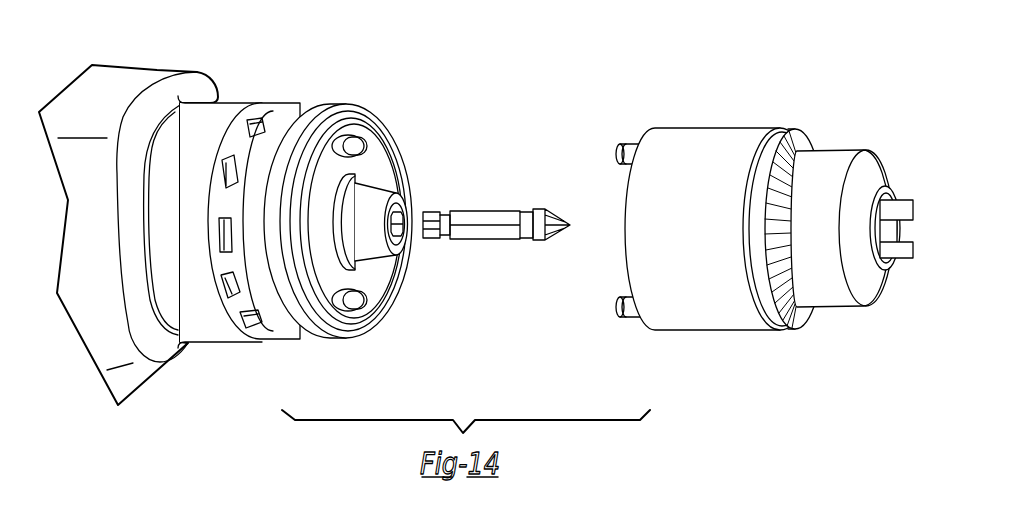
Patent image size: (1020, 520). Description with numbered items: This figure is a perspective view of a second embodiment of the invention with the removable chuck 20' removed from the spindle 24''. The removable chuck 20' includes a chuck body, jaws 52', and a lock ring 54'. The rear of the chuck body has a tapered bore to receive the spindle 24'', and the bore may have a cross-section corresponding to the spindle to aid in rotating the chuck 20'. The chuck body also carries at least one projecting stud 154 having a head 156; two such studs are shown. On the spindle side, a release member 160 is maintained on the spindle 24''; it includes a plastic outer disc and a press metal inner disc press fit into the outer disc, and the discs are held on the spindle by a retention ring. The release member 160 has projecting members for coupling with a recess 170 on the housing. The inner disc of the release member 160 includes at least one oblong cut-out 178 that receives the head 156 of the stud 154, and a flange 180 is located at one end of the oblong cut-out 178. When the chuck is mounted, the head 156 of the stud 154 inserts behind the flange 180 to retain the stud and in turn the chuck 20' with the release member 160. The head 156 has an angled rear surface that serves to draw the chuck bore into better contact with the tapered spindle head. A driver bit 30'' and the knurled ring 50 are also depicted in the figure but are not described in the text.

The removable chuck 20' is at (746, 74).
The spindle 24'' is at (404, 193).
The driver bit 30'' is at (496, 189).
The knurled ring 50 is at (808, 325).
The jaws 52' is at (852, 266).
The lock ring 54' is at (721, 283).
The projecting stud 154 is at (632, 133).
The head 156 is at (620, 147).
The release member 160 is at (307, 98).
The recess 170 is at (262, 330).
The oblong cut-out 178 is at (367, 297).
The flange 180 is at (367, 148).